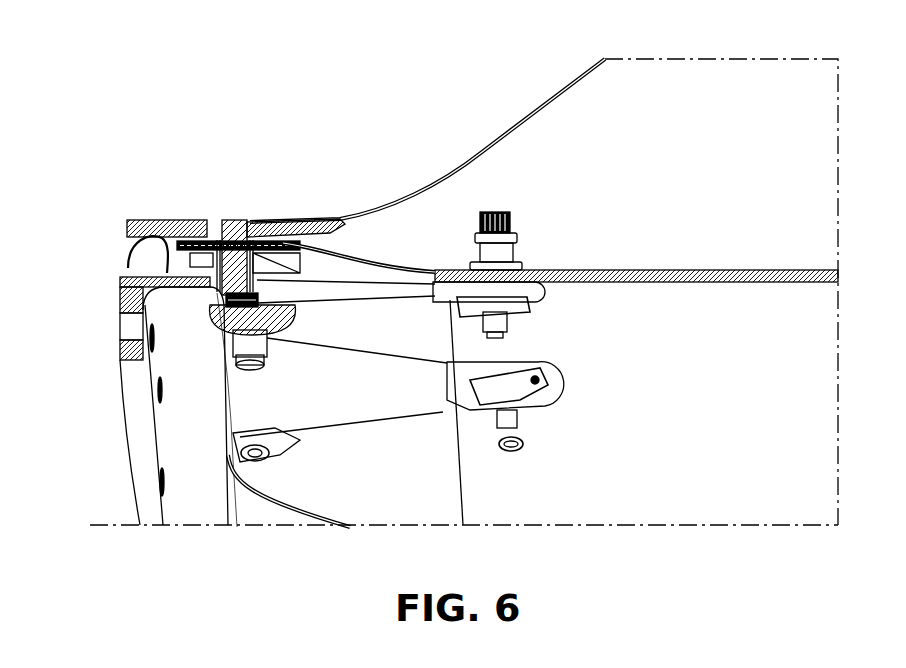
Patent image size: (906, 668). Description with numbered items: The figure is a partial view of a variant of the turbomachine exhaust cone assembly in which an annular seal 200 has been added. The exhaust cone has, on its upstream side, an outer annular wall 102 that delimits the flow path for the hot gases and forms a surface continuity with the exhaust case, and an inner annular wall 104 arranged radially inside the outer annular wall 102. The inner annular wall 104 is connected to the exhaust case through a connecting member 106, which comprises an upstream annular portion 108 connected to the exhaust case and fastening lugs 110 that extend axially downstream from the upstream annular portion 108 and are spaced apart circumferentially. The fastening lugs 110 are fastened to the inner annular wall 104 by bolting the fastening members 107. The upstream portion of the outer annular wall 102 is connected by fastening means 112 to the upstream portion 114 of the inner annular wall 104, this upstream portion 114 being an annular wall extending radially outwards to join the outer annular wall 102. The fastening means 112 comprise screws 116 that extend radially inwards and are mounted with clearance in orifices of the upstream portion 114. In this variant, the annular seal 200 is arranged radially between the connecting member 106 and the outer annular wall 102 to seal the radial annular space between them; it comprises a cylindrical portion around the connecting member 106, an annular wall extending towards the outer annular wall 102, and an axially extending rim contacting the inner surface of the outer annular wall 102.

The outer annular wall 102 is at (563, 85).
The inner annular wall 104 is at (762, 270).
The connecting member 106 is at (127, 532).
The fastening members 107 is at (545, 237).
The upstream annular portion 108 is at (142, 402).
The fastening lugs 110 is at (260, 517).
The fastening means 112 is at (220, 212).
The upstream portion 114 is at (318, 243).
The screws 116 is at (233, 227).
The annular seal 200 is at (132, 257).